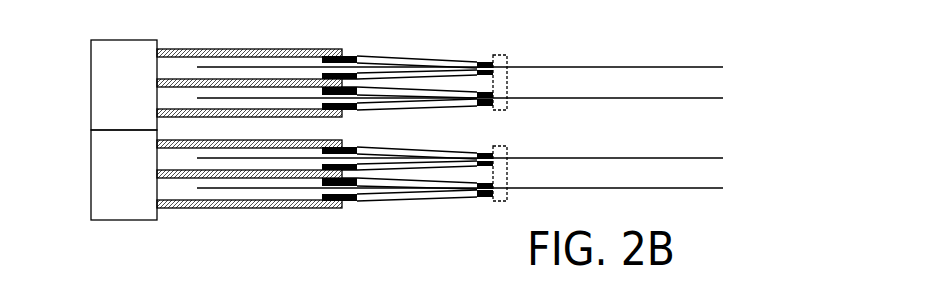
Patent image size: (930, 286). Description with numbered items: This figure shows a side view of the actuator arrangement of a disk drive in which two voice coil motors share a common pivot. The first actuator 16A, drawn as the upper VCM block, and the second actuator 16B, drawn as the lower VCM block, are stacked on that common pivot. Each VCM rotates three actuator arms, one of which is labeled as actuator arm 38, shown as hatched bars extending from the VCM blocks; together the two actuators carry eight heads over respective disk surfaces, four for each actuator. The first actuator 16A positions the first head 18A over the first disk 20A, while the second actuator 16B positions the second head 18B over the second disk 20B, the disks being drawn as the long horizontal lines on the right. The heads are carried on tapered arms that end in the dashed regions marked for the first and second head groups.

The first actuator 16A is at (91, 48).
The second actuator 16B is at (91, 141).
The actuator arm 38 is at (232, 49).
The first head 18A is at (485, 61).
The second head 18B is at (487, 149).
The first disk 20A is at (717, 64).
The second disk 20B is at (713, 155).